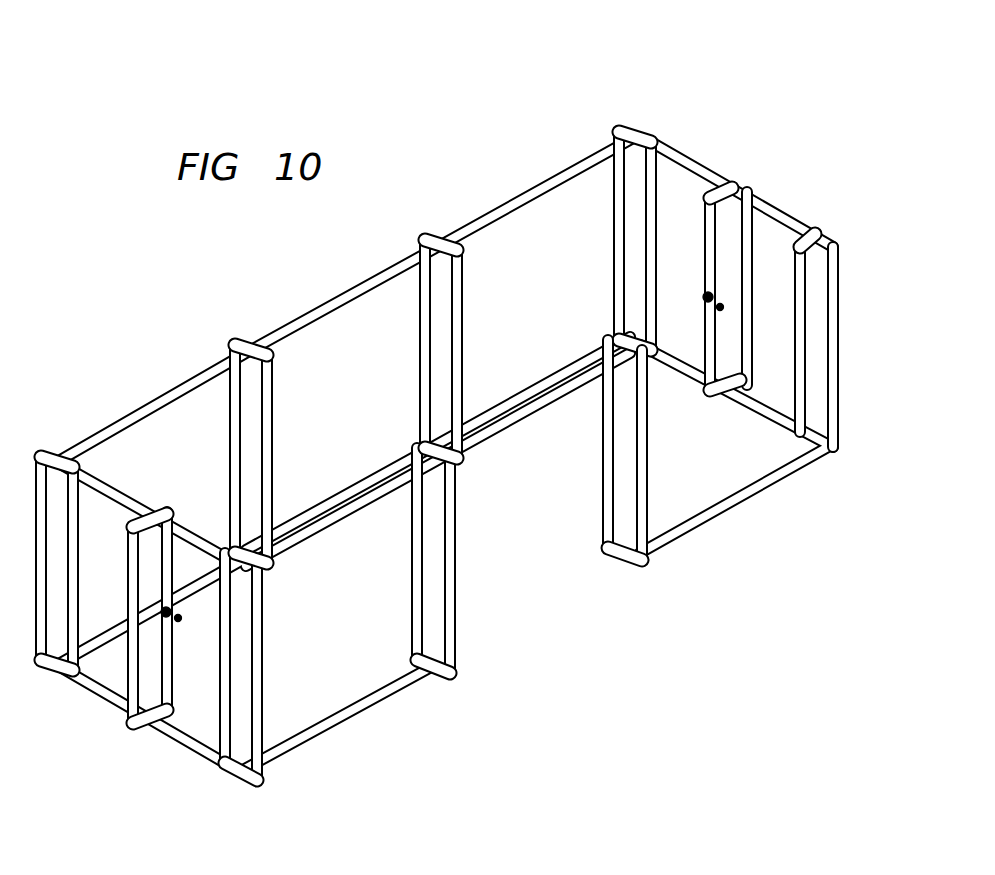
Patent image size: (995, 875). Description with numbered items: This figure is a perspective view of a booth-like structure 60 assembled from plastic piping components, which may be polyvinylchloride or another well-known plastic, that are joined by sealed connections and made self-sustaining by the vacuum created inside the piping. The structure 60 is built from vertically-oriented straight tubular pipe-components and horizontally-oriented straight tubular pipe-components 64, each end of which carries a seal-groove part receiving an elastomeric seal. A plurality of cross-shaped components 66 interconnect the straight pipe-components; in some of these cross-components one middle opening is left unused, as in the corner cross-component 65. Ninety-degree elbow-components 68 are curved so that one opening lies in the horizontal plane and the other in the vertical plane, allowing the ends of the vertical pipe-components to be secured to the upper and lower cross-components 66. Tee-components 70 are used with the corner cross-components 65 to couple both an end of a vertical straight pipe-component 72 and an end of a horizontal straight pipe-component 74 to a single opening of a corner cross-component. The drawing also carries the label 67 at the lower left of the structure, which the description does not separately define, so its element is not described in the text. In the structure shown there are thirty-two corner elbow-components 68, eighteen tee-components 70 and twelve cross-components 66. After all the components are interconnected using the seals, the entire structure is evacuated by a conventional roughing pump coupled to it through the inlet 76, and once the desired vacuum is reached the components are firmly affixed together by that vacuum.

The structure 60 is at (677, 125).
The horizontally-oriented straight tubular pipe-component 64 is at (540, 182).
The corner cross-component 65 is at (652, 561).
The cross-shaped component 66 is at (262, 338).
The gate frame 67 is at (47, 577).
The 90-degree elbow-component 68 is at (38, 447).
The tee-component 70 is at (807, 223).
The vertical straight pipe-component 72 is at (607, 430).
The horizontal straight pipe-component 74 is at (757, 193).
The inlet 76 is at (722, 310).